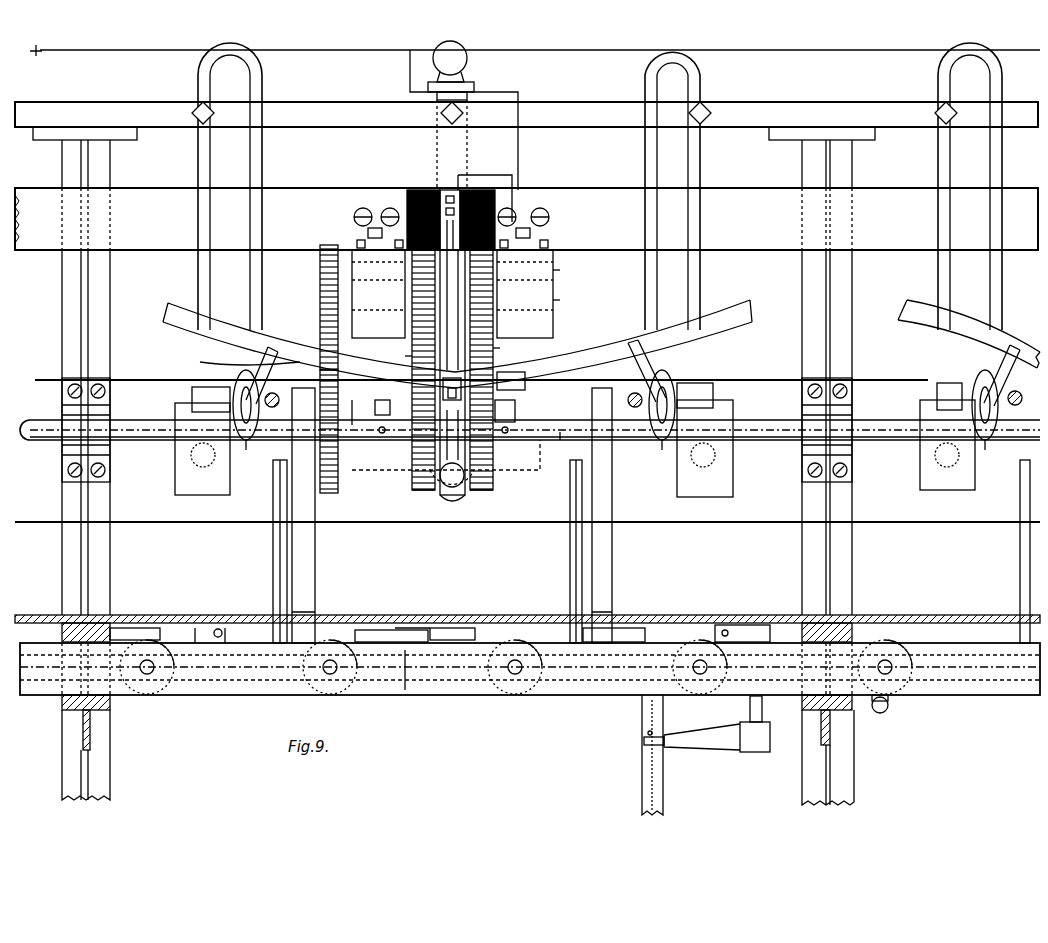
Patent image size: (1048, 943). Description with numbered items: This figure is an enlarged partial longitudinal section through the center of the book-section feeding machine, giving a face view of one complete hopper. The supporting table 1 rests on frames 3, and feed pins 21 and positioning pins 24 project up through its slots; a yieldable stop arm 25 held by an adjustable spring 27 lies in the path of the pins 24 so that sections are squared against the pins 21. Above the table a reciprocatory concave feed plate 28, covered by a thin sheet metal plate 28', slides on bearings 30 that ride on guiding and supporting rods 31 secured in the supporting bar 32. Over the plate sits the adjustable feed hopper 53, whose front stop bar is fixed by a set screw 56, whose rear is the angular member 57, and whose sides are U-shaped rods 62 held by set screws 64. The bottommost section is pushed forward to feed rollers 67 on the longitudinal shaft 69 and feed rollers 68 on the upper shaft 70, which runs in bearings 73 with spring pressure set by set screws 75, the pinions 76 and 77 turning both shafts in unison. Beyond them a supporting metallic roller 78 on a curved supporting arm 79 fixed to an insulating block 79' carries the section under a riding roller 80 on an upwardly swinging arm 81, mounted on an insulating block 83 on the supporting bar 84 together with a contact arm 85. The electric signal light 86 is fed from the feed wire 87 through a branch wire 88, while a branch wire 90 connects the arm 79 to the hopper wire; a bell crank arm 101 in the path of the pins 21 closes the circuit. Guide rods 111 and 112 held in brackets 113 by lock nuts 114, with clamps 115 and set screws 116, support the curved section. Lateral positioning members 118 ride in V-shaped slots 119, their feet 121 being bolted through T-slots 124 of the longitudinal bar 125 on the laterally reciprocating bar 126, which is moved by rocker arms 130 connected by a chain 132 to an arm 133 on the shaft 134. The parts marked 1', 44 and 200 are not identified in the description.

The supporting table 1 is at (527, 607).
The base tube 1' is at (400, 689).
The frame 3 is at (110, 160).
The upstanding pin 21 is at (760, 366).
The upstanding pin 24 is at (273, 568).
The yieldable stop arm 25 is at (413, 628).
The adjustable spring 27 is at (457, 633).
The reciprocatory concave feed plate 28 is at (601, 344).
The thin sheet metal plate 28' is at (633, 351).
The bearing 30 is at (446, 373).
The guiding and supporting rod 31 is at (452, 487).
The supporting bar 32 is at (155, 522).
The bracket 44 is at (490, 175).
The adjustable feed hopper 53 is at (518, 242).
The set screw 56 is at (441, 113).
The angular member 57 is at (794, 103).
The U-shaped rod 62 is at (200, 150).
The set screw 64 is at (192, 113).
The feed roller 67 is at (422, 490).
The feed roller 68 is at (412, 312).
The longitudinal shaft 69 is at (565, 432).
The shaft 70 is at (553, 300).
The bearing 73 is at (452, 294).
The set screw 75 is at (372, 210).
The pinion 76 is at (320, 284).
The pinion 77 is at (330, 495).
The supporting metallic roller 78 is at (443, 393).
The curved supporting arm 79 is at (468, 453).
The block of insulating material 79' is at (358, 449).
The riding roller 80 is at (412, 357).
The upwardly swinging arm 81 is at (493, 348).
The block of insulating material 83 is at (415, 190).
The supporting bar 84 is at (526, 195).
The contact arm 85 is at (510, 268).
The electric signal light 86 is at (468, 58).
The electric feed wire 87 is at (571, 52).
The branch wire 88 is at (410, 88).
The branch wire 90 is at (522, 388).
The bell crank arm 101 is at (222, 630).
The supporting guide rod 111 is at (200, 362).
The guide rod 112 is at (262, 425).
The bracket 113 is at (580, 382).
The lock nut 114 is at (245, 442).
The clamp 115 is at (175, 468).
The set screw 116 is at (733, 462).
The lateral positioning member 118 is at (315, 576).
The V-shaped slot 119 is at (315, 608).
The foot 121 is at (519, 635).
The T-slot 124 is at (888, 708).
The longitudinal bar 125 is at (725, 630).
The laterally reciprocating bar 126 is at (20, 690).
The rocker arm 130 is at (642, 778).
The chain 132 is at (644, 740).
The arm 133 is at (718, 752).
The shaft 134 is at (750, 712).
The pin 200 is at (240, 637).